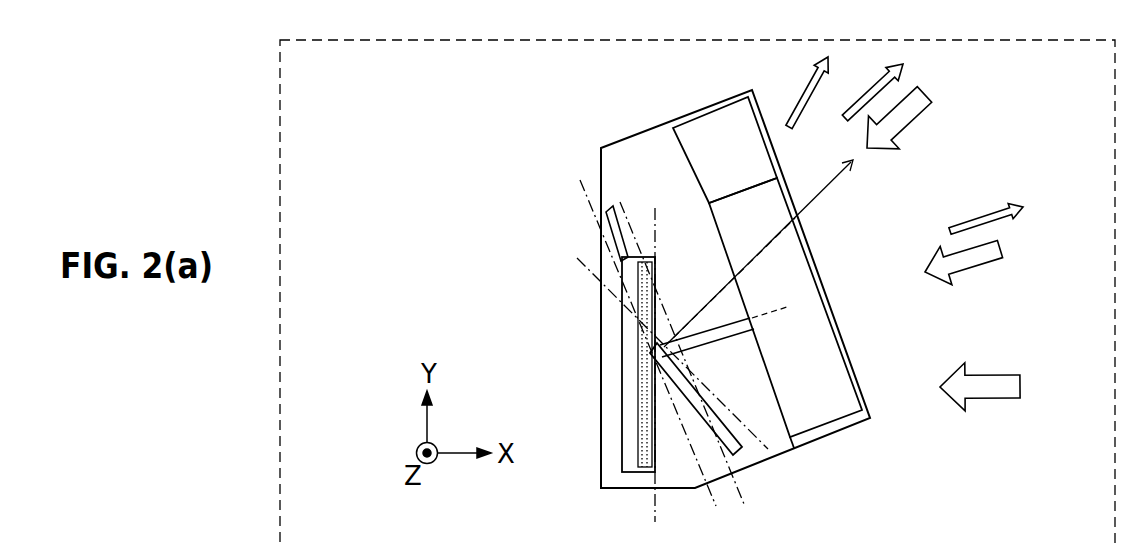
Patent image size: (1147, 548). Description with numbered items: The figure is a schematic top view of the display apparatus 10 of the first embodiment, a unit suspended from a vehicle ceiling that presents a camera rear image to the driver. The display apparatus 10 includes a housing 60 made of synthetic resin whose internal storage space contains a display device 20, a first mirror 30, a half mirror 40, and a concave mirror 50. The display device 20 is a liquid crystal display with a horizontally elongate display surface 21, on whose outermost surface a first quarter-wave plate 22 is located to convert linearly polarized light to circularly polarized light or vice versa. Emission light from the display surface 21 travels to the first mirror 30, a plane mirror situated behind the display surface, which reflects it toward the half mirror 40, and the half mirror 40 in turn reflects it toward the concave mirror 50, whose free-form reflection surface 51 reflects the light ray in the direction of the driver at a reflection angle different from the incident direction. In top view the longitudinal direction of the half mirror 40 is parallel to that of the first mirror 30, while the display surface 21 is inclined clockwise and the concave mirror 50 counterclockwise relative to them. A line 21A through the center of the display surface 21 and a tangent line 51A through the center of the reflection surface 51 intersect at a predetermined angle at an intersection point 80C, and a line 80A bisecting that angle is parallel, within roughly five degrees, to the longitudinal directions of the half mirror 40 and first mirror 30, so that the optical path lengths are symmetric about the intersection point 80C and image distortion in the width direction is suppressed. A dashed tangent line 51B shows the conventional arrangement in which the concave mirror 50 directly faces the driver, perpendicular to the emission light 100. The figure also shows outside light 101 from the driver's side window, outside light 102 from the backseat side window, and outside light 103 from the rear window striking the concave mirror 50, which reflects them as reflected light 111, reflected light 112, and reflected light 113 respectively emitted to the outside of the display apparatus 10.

The display apparatus 10 is at (560, 338).
The display device 20 is at (661, 313).
The display surface 21 is at (650, 302).
The line 21A is at (652, 519).
The first λ/4 plate 22 is at (657, 270).
The first mirror 30 is at (808, 278).
The half mirror 40 is at (762, 165).
The concave mirror 50 is at (747, 411).
The reflection surface 51 is at (700, 392).
The tangent line 51A is at (740, 484).
The tangent line 51B is at (573, 253).
The housing 60 is at (662, 125).
The line 80A is at (698, 494).
The intersection point 80C is at (646, 323).
The emission light 100 is at (818, 195).
The outside light 101 is at (917, 112).
The outside light 102 is at (977, 268).
The outside light 103 is at (997, 400).
The reflected light 111 is at (972, 223).
The reflected light 112 is at (905, 70).
The reflected light 113 is at (797, 88).